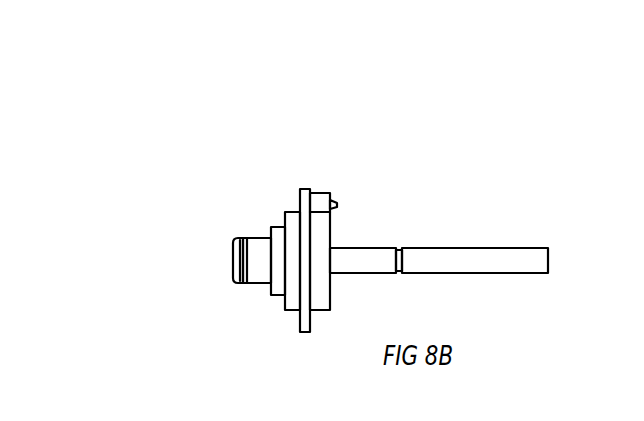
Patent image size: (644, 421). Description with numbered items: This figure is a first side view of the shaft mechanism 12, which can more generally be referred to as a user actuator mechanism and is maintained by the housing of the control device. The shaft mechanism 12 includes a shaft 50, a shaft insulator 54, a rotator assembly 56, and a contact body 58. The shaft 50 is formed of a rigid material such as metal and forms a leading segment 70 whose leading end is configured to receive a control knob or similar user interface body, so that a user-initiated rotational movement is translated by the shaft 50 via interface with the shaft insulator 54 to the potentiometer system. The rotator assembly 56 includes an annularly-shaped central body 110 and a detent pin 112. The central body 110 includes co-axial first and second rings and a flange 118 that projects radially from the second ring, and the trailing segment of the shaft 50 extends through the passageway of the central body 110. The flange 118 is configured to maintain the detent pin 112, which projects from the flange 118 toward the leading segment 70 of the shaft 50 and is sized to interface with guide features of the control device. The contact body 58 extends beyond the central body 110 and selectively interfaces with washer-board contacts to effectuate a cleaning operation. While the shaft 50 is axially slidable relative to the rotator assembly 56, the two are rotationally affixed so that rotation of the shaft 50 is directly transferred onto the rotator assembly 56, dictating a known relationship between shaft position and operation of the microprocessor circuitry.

The shaft mechanism 12 is at (338, 193).
The shaft 50 is at (482, 217).
The shaft insulator 54 is at (250, 285).
The rotator assembly 56 is at (176, 192).
The contact body 58 is at (162, 298).
The leading segment 70 is at (485, 278).
The central body 110 is at (295, 313).
The detent pin 112 is at (337, 205).
The flange 118 is at (313, 202).